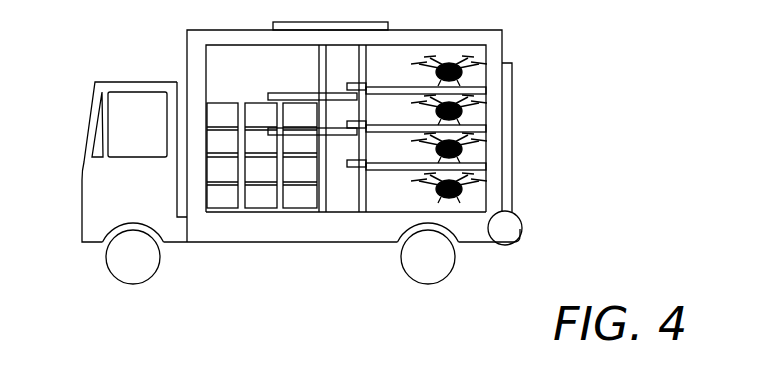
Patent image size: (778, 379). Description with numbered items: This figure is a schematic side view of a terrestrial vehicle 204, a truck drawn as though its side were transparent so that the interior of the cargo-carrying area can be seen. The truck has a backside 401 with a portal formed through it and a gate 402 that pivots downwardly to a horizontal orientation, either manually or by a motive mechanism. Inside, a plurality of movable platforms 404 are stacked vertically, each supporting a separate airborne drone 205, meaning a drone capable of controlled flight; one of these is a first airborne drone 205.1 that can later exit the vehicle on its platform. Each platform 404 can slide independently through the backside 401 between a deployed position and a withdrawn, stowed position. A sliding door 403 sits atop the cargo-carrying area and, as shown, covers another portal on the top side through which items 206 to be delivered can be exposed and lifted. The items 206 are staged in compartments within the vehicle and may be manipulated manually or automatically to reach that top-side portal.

The terrestrial vehicle 204 is at (230, 230).
The backside 401 is at (503, 43).
The gate 402 is at (512, 99).
The sliding door 403 is at (325, 23).
The movable platforms 404 is at (473, 207).
The airborne drone 205 is at (477, 60).
The first airborne drone 205.1 is at (463, 193).
The items 206 is at (253, 103).